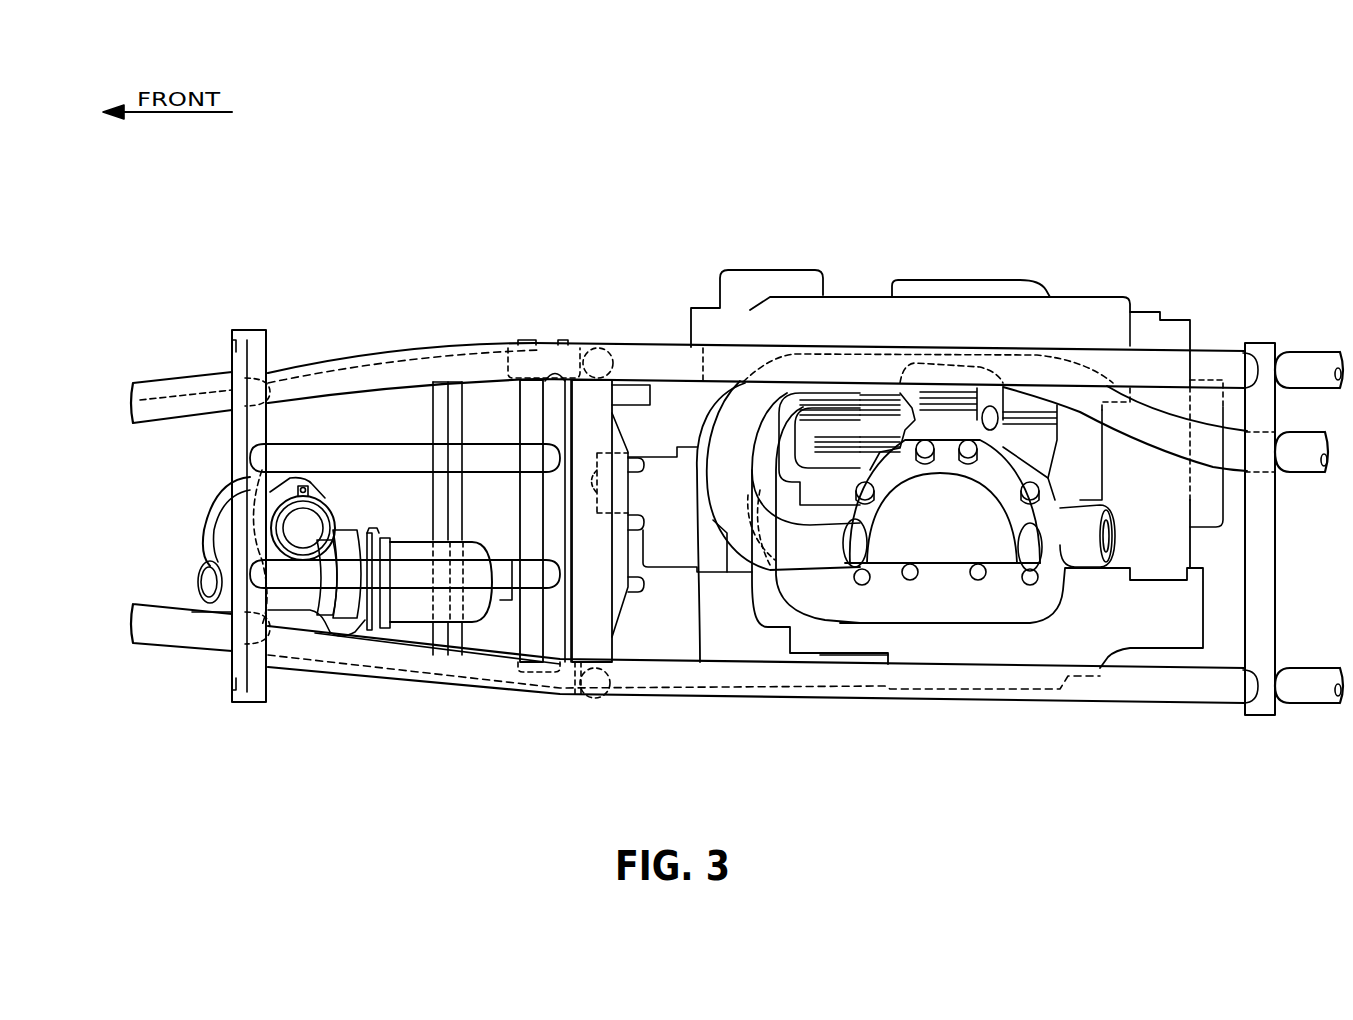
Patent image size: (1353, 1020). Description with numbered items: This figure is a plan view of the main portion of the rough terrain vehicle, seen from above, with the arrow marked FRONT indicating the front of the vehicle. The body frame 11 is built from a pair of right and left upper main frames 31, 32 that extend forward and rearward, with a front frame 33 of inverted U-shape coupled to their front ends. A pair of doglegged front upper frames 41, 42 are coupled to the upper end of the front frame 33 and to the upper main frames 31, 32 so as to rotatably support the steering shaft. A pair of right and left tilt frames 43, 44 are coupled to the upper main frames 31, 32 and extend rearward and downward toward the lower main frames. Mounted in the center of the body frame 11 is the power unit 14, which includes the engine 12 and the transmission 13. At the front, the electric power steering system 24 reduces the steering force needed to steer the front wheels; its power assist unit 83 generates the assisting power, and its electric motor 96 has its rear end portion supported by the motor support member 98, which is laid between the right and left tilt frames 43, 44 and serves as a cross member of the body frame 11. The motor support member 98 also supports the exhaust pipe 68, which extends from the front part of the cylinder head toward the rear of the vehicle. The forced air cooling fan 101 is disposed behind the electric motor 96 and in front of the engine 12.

The body frame 11 is at (331, 364).
The engine 12 is at (937, 564).
The transmission 13 is at (982, 644).
The power unit 14 is at (925, 282).
The electric power steering system 24 is at (196, 522).
The upper main frame 31 is at (1098, 690).
The upper main frame 32 is at (1109, 368).
The front frame 33 is at (163, 637).
The front upper frame 41 is at (507, 582).
The front upper frame 42 is at (490, 440).
The tilt frame 43 is at (476, 686).
The tilt frame 44 is at (493, 455).
The exhaust pipe 68 is at (737, 492).
The power assist unit 83 is at (318, 634).
The electric motor 96 is at (411, 610).
The motor support member 98 is at (457, 400).
The forced air cooling fan 101 is at (595, 413).